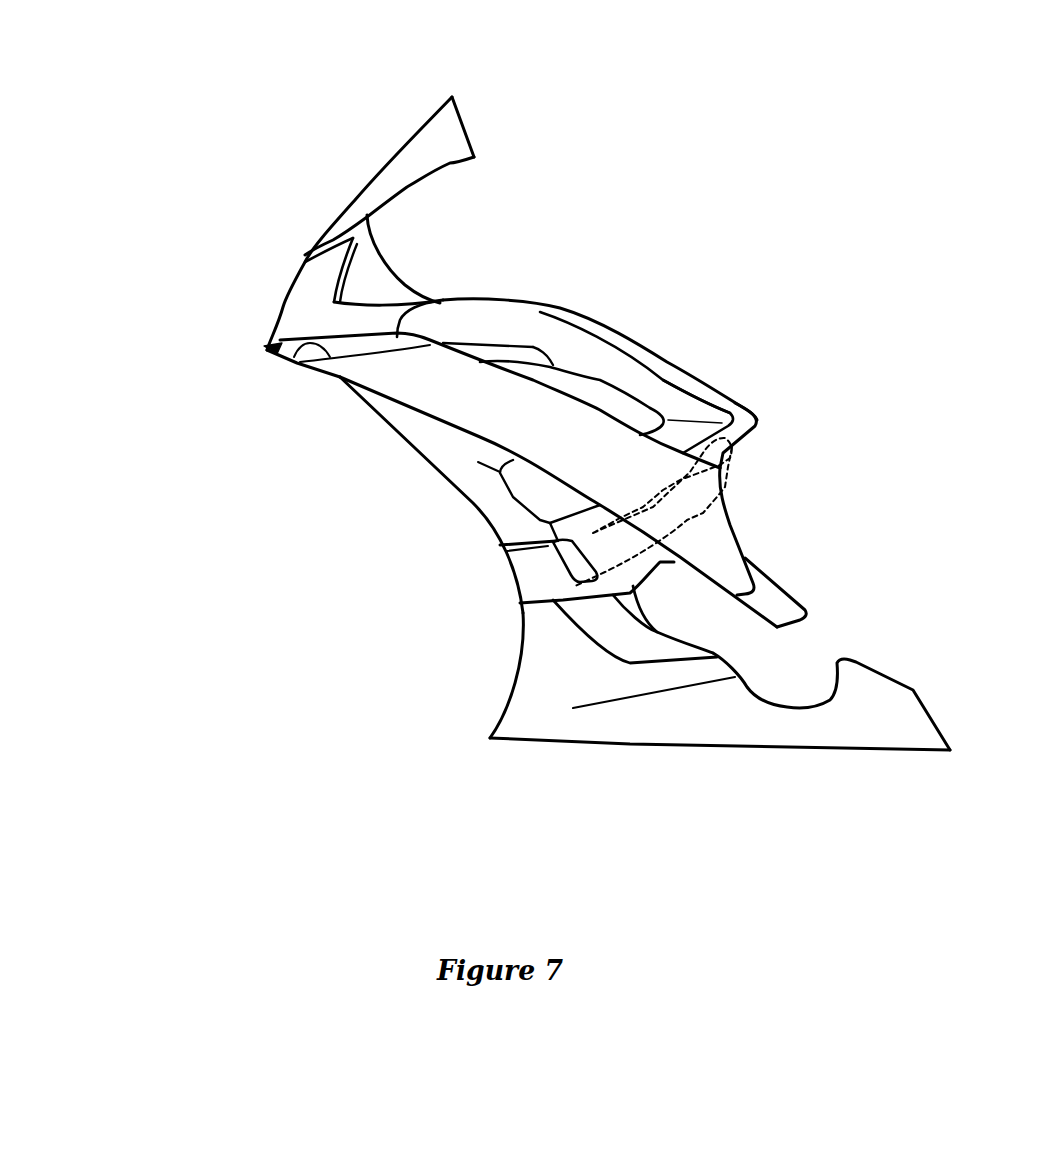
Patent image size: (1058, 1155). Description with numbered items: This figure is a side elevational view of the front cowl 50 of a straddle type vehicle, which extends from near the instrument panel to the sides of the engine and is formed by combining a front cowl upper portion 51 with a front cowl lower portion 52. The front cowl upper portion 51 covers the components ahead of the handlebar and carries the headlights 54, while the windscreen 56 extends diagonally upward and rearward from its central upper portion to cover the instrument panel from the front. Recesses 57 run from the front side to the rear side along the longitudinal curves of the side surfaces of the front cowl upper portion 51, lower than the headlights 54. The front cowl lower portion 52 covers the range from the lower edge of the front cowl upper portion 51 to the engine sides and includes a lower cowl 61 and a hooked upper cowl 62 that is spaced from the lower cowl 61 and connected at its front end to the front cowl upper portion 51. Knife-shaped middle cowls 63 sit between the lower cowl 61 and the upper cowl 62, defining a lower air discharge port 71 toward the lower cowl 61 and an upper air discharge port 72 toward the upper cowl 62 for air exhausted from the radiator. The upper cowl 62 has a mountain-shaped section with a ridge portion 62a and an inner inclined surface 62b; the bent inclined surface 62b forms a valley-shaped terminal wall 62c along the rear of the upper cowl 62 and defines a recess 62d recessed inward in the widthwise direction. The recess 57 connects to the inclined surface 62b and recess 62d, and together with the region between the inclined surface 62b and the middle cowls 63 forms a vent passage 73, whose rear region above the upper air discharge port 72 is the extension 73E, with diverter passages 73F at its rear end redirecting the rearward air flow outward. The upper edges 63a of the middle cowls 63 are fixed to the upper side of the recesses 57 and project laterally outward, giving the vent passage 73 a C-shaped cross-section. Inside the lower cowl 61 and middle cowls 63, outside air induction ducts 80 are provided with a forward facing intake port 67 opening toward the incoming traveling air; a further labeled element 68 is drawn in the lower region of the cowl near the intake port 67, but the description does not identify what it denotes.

The front cowl 50 is at (787, 363).
The front cowl upper portion 51 is at (266, 349).
The front cowl lower portion 52 is at (491, 755).
The headlights 54 is at (281, 223).
The windscreen 56 is at (370, 175).
The recesses 57 is at (395, 275).
The lower cowl 61 is at (452, 492).
The upper cowl 62 is at (620, 332).
The ridge portion 62a is at (565, 301).
The inner inclined surface 62b is at (636, 352).
The terminal wall 62c is at (808, 412).
The recess 62d is at (721, 407).
The middle cowls 63 is at (441, 393).
The upper edges 63a is at (260, 413).
The intake port 67 is at (543, 604).
The support strut 68 is at (615, 680).
The lower air discharge port 71 is at (489, 524).
The upper air discharge port 72 is at (528, 361).
The vent passage 73 is at (486, 271).
The extension 73E is at (549, 297).
The diverter passages 73F is at (707, 321).
The outside air induction ducts 80 is at (688, 520).